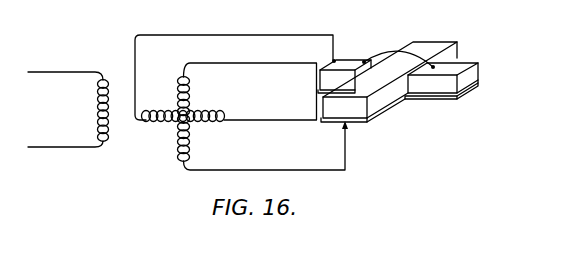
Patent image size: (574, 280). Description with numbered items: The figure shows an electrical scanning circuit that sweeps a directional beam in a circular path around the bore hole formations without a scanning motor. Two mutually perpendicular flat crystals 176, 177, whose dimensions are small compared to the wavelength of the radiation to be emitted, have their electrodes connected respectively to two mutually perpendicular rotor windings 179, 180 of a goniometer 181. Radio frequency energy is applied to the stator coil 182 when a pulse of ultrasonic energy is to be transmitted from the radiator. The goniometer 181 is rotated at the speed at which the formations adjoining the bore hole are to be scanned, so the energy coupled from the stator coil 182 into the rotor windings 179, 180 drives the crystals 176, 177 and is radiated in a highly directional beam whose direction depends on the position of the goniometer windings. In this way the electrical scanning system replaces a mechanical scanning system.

The flat crystal 176 is at (468, 78).
The flat crystal 177 is at (389, 96).
The rotor winding 179 is at (199, 124).
The rotor winding 180 is at (189, 83).
The goniometer 181 is at (180, 116).
The stator coil 182 is at (96, 112).